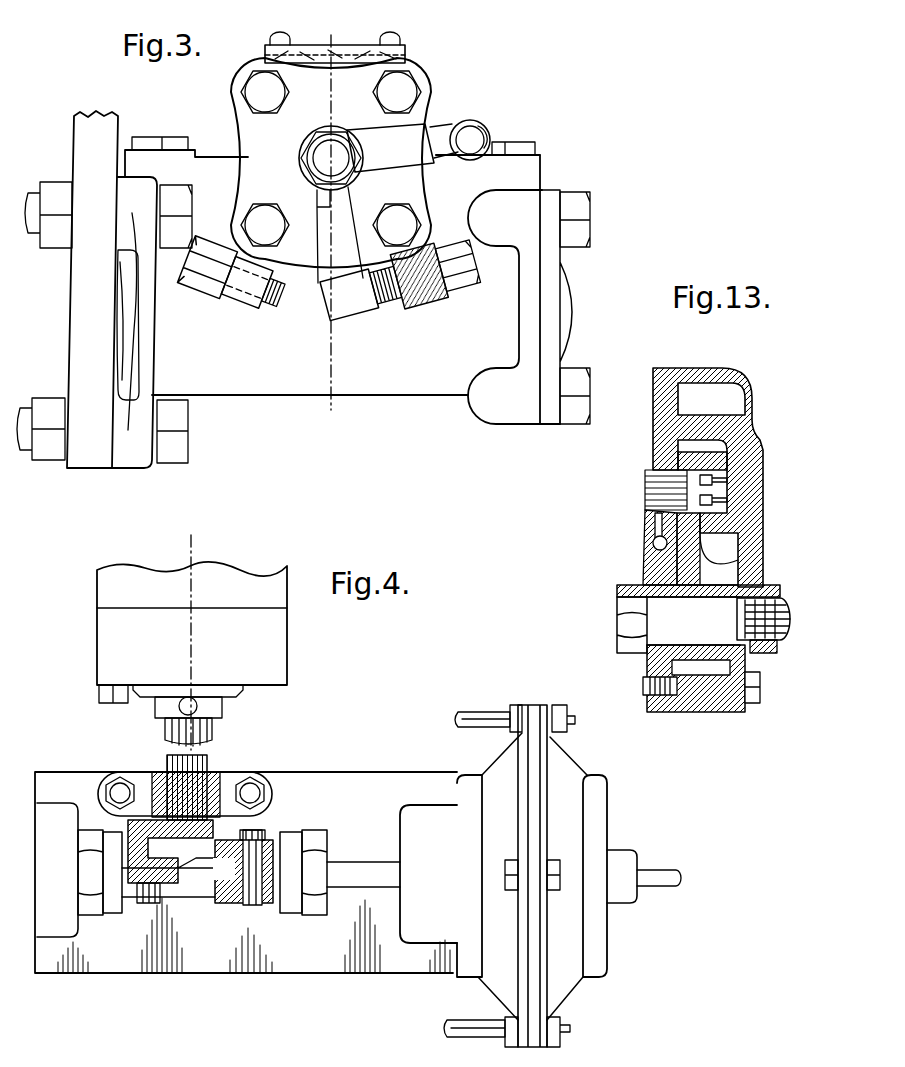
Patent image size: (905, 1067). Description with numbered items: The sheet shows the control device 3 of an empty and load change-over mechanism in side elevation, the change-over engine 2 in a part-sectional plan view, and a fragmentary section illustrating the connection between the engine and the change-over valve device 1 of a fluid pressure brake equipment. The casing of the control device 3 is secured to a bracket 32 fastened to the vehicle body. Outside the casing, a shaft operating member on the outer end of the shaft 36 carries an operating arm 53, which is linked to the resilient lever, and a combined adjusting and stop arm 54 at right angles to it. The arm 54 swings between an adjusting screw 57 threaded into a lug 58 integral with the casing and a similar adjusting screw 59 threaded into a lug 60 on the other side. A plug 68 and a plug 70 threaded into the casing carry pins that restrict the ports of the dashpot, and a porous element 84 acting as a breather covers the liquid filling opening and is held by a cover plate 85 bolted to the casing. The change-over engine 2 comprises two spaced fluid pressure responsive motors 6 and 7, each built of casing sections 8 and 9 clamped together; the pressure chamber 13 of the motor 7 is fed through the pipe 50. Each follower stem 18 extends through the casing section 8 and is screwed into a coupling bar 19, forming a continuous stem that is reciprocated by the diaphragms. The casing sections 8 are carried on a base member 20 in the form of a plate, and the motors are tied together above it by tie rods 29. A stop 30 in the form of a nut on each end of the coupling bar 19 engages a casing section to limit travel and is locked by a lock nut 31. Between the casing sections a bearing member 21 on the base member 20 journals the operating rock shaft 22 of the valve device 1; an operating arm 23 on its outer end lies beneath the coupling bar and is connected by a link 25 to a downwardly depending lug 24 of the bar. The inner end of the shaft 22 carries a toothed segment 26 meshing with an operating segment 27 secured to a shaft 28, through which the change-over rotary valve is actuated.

In FIG. 13, the change-over valve device 1 is at (748, 396).
In FIG. 4, the change-over valve device 1 is at (312, 623).
In FIG. 4, the change-over engine 2 is at (343, 775).
In FIG. 3, the control device 3 is at (543, 148).
In FIG. 4, the fluid pressure responsive motor 6 is at (72, 803).
In FIG. 4, the fluid pressure responsive motor 7 is at (576, 751).
In FIG. 3, the casing section 8 is at (331, 35).
In FIG. 4, the casing section 8 is at (505, 760).
In FIG. 4, the casing section 9 is at (582, 774).
In FIG. 4, the pressure chamber 13 is at (191, 535).
In FIG. 4, the stem 18 is at (383, 878).
In FIG. 4, the coupling bar 19 is at (278, 903).
In FIG. 4, the base member 20 is at (387, 787).
In FIG. 4, the bearing member 21 is at (223, 785).
In FIG. 13, the operating rock shaft 22 is at (778, 600).
In FIG. 4, the operating rock shaft 22 is at (207, 773).
In FIG. 4, the operating arm 23 is at (198, 838).
In FIG. 4, the lug 24 is at (233, 887).
In FIG. 4, the link 25 is at (197, 873).
In FIG. 13, the toothed segment 26 is at (700, 565).
In FIG. 13, the operating segment 27 is at (735, 525).
In FIG. 13, the shaft 28 is at (655, 490).
In FIG. 4, the tie rod 29 is at (470, 718).
In FIG. 4, the stop 30 is at (88, 910).
In FIG. 4, the lock nut 31 is at (112, 913).
In FIG. 3, the bracket 32 is at (90, 320).
In FIG. 3, the shaft 36 is at (320, 158).
In FIG. 4, the pipe 50 is at (663, 881).
In FIG. 3, the operating arm 53 is at (397, 143).
In FIG. 3, the combined adjusting and stop arm 54 is at (318, 200).
In FIG. 3, the adjusting screw 57 is at (393, 313).
In FIG. 3, the lug 58 is at (425, 300).
In FIG. 3, the adjusting screw 59 is at (272, 307).
In FIG. 3, the lug 60 is at (233, 302).
In FIG. 3, the plug 68 is at (496, 140).
In FIG. 3, the plug 70 is at (172, 138).
In FIG. 3, the porous element 84 is at (410, 62).
In FIG. 3, the cover plate 85 is at (405, 50).